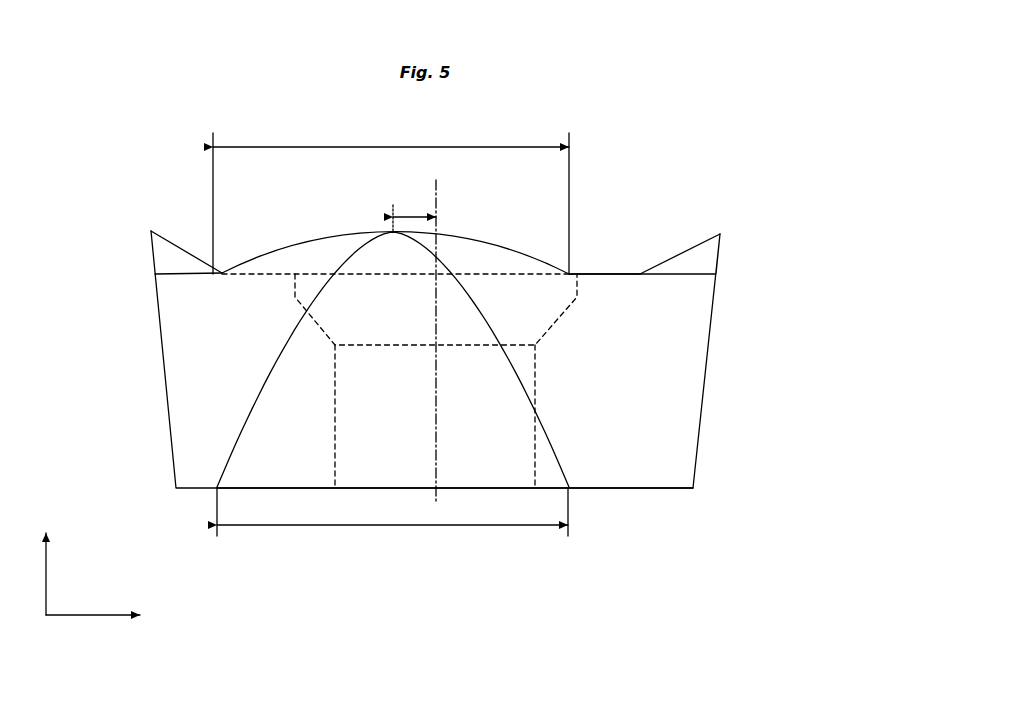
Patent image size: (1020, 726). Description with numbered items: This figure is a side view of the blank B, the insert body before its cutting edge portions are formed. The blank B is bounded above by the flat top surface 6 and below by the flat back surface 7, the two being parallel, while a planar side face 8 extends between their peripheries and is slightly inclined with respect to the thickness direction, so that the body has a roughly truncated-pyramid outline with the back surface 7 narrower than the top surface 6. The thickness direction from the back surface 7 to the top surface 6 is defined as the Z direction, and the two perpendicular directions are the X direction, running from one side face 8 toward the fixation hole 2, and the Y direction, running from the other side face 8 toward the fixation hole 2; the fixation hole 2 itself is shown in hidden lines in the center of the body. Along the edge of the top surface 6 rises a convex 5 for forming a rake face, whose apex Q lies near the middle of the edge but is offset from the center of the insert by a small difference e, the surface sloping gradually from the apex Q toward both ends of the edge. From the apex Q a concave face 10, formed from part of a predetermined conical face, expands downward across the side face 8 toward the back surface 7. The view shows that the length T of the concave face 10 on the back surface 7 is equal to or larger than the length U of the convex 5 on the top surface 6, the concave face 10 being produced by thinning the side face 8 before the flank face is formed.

The fixation hole 2 is at (338, 408).
The convex 5 is at (177, 240).
The top surface 6 is at (616, 272).
The back surface 7 is at (541, 490).
The side face 8 is at (164, 369).
The concave face 10 is at (256, 406).
The blank B is at (635, 199).
The apex Q is at (391, 231).
The length of the convex U is at (391, 199).
The length of the concave face T is at (392, 521).
The offset difference e is at (414, 214).
The Y direction Y is at (434, 331).
The X direction X is at (102, 616).
The Z direction Z is at (45, 561).